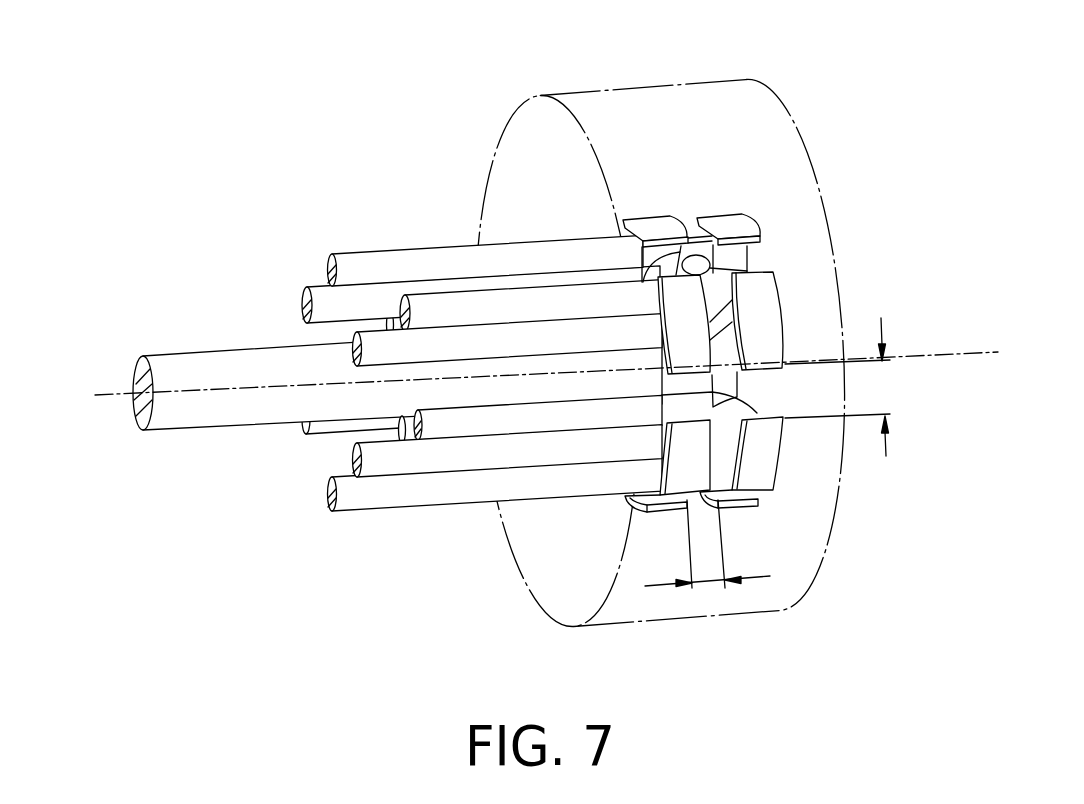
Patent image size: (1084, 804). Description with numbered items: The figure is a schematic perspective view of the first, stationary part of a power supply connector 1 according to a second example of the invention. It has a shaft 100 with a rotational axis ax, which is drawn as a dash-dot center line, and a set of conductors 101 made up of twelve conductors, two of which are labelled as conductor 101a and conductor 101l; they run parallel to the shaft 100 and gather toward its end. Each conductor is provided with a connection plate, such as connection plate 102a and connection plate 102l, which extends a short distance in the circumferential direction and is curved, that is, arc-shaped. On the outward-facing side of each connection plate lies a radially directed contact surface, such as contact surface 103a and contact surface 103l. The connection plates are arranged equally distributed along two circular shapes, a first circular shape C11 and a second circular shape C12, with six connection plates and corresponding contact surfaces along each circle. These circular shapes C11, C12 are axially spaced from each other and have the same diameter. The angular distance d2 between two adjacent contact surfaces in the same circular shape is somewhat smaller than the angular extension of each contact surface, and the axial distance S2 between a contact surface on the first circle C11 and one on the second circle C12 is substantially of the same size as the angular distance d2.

The connection assembly 1 is at (458, 148).
The shaft 100 is at (245, 348).
The set of conductors 101 is at (337, 225).
The conductor 101a is at (432, 248).
The conductor 101l is at (422, 458).
The connection plate 102a is at (653, 232).
The contact surface 103a is at (665, 230).
The connection plate 102l is at (650, 497).
The contact surface 103l is at (687, 483).
The rotational axis ax is at (128, 393).
The angular distance d2 is at (852, 387).
The first circular shape C11 is at (753, 520).
The second circular shape C12 is at (620, 513).
The axial distance S2 is at (716, 580).